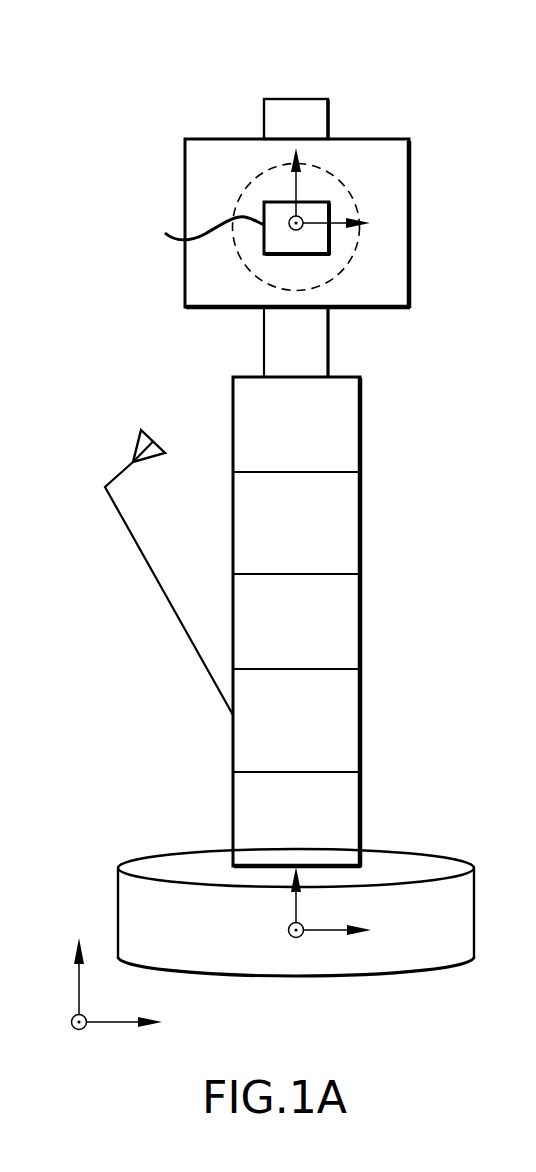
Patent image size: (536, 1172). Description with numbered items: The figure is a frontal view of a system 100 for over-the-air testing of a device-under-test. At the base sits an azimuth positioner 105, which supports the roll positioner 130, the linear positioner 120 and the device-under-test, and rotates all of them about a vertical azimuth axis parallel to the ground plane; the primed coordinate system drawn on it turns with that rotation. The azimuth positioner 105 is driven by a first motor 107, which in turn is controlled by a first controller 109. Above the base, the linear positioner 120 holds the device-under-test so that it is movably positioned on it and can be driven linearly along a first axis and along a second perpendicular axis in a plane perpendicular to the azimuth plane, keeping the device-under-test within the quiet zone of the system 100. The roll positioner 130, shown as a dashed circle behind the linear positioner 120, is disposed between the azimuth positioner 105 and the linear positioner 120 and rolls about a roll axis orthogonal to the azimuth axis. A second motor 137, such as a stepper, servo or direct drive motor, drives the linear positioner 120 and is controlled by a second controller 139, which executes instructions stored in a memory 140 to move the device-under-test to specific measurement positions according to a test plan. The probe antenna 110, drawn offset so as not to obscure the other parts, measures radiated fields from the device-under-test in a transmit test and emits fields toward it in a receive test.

The system 100 is at (181, 85).
The azimuth positioner 105 is at (413, 863).
The first motor 107 is at (314, 650).
The first controller 109 is at (314, 762).
The probe antenna 110 is at (138, 555).
The linear positioner 120 is at (323, 238).
The roll positioner 130 is at (336, 178).
The second motor 137 is at (314, 451).
The second controller 139 is at (314, 563).
The memory 140 is at (314, 848).